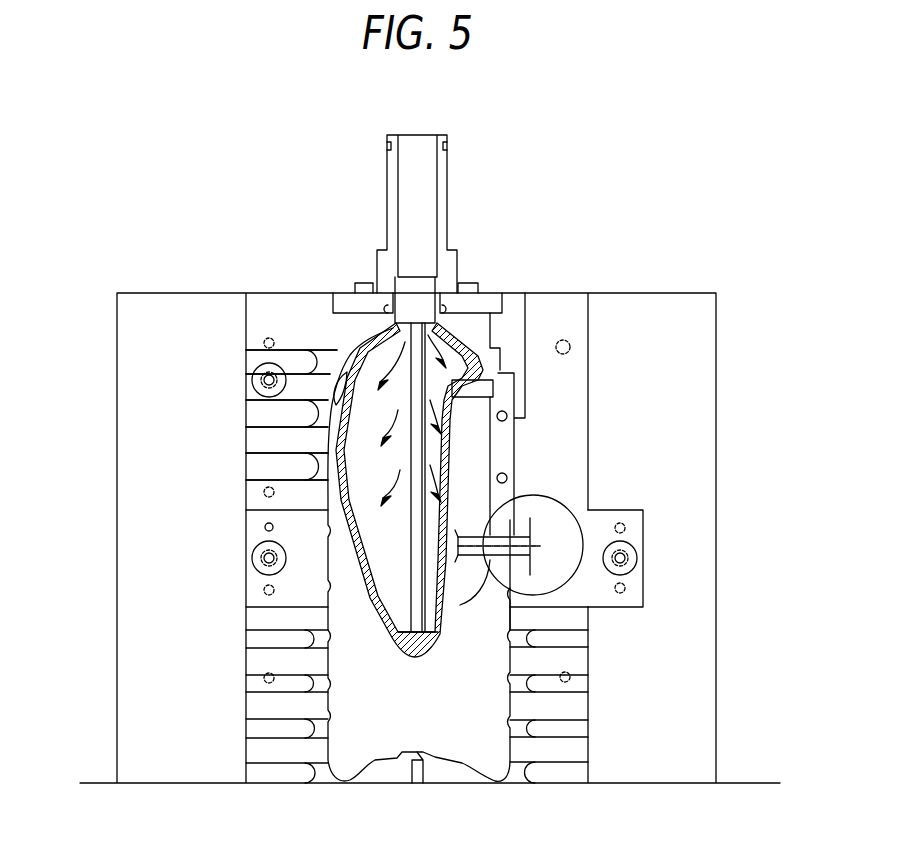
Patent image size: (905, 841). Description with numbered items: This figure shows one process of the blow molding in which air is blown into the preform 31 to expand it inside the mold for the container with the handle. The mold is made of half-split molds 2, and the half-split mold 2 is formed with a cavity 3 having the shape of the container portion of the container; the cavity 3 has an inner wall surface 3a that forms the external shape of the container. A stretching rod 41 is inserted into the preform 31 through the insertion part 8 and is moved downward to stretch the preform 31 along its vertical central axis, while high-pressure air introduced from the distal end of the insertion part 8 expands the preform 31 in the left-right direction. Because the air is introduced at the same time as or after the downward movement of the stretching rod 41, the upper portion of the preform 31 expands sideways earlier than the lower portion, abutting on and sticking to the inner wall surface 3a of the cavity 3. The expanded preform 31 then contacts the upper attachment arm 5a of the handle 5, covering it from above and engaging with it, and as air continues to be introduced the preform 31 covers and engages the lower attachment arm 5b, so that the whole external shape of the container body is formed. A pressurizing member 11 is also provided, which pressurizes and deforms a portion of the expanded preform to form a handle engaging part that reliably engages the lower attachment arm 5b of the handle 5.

The half-split mold 2 is at (642, 748).
The cavity 3 is at (480, 710).
The inner wall surface 3a is at (312, 407).
The preform 31 is at (280, 447).
The stretching rod 41 is at (417, 522).
The insertion part 8 is at (425, 213).
The handle 5 is at (525, 400).
The upper attachment arm 5a is at (482, 396).
The lower attachment arm 5b is at (503, 617).
The pressurizing member 11 is at (530, 523).